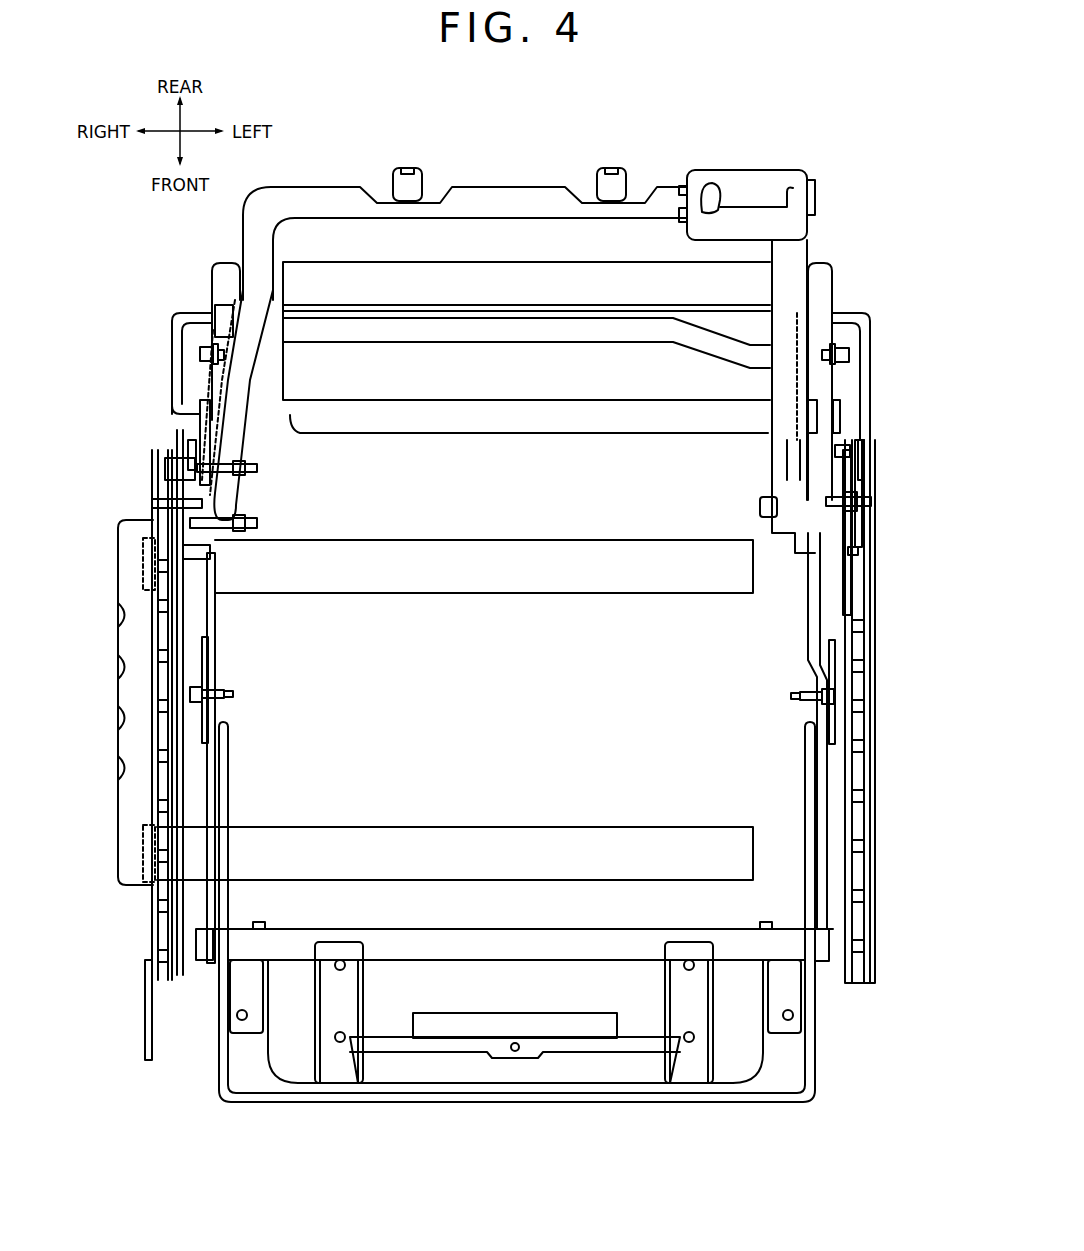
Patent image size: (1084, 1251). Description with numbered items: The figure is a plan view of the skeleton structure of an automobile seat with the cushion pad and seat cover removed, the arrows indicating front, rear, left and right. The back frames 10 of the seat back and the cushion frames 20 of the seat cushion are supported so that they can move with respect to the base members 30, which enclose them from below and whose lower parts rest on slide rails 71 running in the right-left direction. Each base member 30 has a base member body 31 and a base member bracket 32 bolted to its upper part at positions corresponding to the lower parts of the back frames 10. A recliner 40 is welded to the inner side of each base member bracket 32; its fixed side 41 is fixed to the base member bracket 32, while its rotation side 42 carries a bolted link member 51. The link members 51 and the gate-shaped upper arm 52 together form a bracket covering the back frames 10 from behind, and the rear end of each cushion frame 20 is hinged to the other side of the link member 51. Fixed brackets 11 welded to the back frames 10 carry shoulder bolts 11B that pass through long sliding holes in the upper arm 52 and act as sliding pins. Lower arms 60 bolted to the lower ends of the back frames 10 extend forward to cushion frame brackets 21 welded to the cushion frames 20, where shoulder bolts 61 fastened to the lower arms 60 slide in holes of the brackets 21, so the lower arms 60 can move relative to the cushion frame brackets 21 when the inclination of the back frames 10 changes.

The back frame 10 is at (770, 392).
The fixed bracket 11 is at (218, 330).
The shoulder bolt 11B is at (200, 356).
The cushion frame 20 is at (740, 960).
The cushion frame bracket 21 is at (200, 660).
The base member 30 is at (166, 345).
The base member body 31 is at (170, 397).
The base member bracket 32 is at (190, 455).
The recliner 40 is at (192, 442).
The fixed side 41 is at (212, 558).
The rotation side 42 is at (200, 475).
The link member 51 is at (240, 437).
The upper arm 52 is at (212, 292).
The lower arm 60 is at (215, 620).
The shoulder bolt 61 is at (233, 694).
The slide rail 71 is at (449, 535).